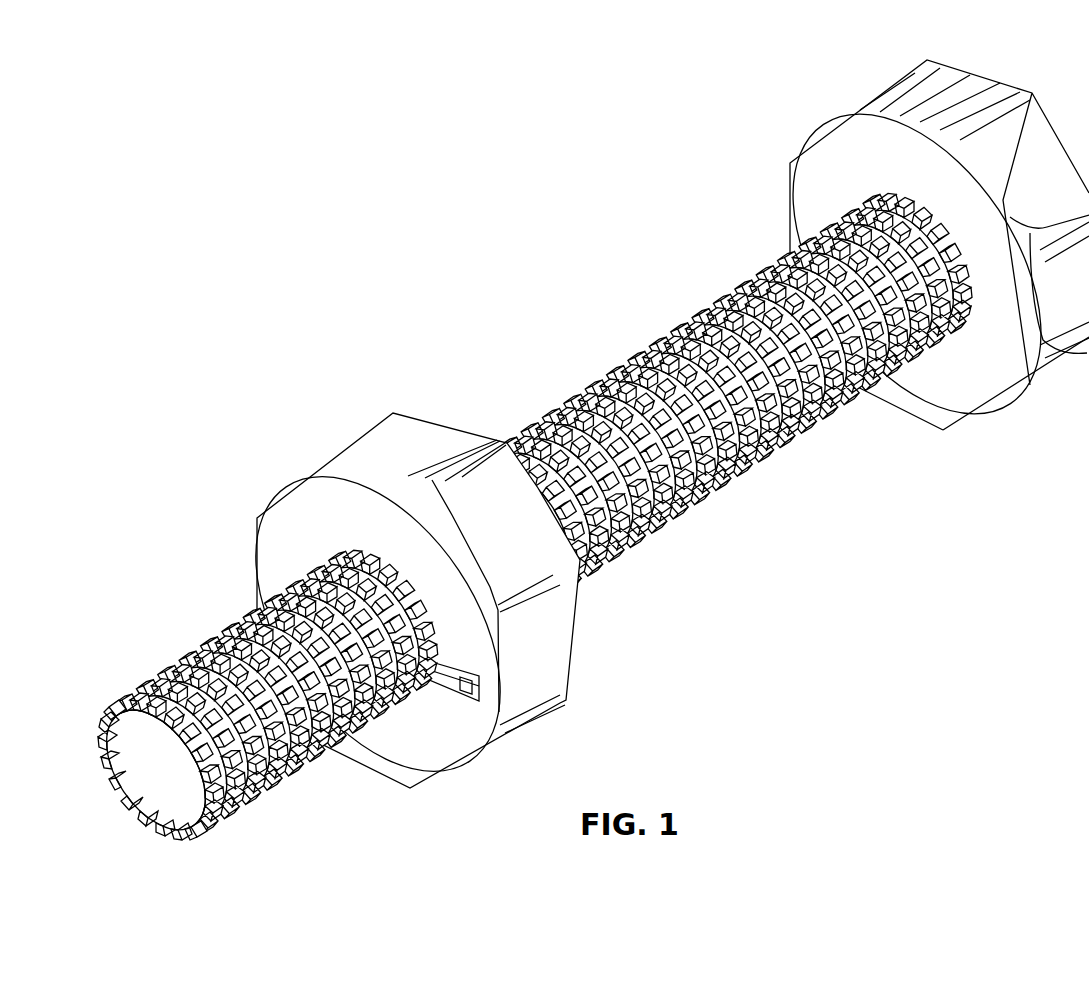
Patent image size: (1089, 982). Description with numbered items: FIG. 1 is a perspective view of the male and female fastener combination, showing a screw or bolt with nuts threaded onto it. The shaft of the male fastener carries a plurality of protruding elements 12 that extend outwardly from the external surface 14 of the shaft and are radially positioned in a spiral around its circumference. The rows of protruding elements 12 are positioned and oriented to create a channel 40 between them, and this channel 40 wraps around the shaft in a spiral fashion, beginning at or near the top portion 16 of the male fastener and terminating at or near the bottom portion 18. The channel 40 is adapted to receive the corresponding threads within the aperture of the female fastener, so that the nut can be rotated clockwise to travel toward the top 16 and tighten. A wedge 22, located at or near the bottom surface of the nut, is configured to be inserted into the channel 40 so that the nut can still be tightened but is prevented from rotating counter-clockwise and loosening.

The protruding elements 12 is at (540, 438).
The external surface 14 is at (212, 683).
The top portion 16 is at (785, 85).
The bottom portion 18 is at (222, 845).
The wedge 22 is at (450, 688).
The channel 40 is at (742, 328).